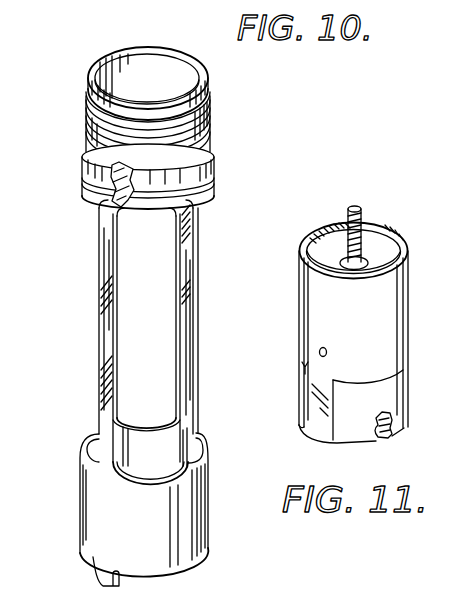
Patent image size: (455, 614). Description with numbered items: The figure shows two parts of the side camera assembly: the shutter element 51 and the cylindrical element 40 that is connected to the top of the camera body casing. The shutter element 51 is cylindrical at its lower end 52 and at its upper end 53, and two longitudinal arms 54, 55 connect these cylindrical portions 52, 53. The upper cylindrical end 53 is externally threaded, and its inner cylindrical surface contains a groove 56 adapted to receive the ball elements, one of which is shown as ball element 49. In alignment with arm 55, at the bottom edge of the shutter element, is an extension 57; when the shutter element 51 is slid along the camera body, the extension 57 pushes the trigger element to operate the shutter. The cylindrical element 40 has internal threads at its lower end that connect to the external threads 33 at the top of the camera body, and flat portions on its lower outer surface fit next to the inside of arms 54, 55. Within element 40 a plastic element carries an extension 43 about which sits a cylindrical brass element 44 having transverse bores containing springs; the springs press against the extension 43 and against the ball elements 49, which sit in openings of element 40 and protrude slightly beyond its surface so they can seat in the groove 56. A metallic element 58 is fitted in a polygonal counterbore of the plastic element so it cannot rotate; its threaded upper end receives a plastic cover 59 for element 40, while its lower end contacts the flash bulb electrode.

In FIG. 10, the upper cylindrical end 53 is at (100, 135).
In FIG. 10, the groove 56 is at (110, 193).
In FIG. 10, the shutter element 51 is at (99, 317).
In FIG. 10, the longitudinal arm 54 is at (185, 298).
In FIG. 10, the longitudinal arm 55 is at (103, 408).
In FIG. 10, the lower cylindrical end 52 is at (93, 508).
In FIG. 10, the extension 57 is at (107, 575).
In FIG. 11, the cylindrical element 40 is at (317, 287).
In FIG. 11, the cylindrical brass element 44 is at (407, 262).
In FIG. 11, the extension 43 is at (378, 263).
In FIG. 11, the metallic element 58 is at (347, 216).
In FIG. 11, the plastic cover 59 is at (368, 246).
In FIG. 11, the ball element 49 is at (319, 353).
In FIG. 11, the external threads 33 is at (392, 424).